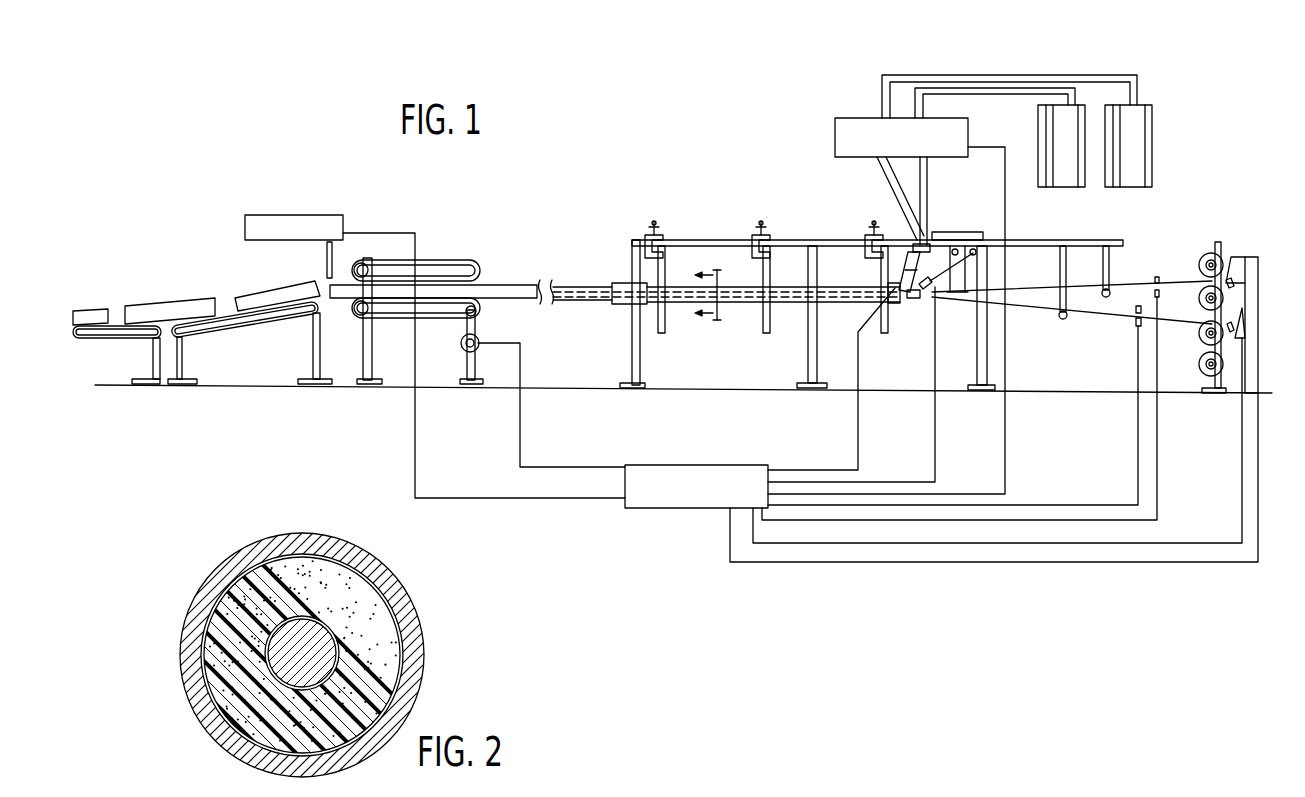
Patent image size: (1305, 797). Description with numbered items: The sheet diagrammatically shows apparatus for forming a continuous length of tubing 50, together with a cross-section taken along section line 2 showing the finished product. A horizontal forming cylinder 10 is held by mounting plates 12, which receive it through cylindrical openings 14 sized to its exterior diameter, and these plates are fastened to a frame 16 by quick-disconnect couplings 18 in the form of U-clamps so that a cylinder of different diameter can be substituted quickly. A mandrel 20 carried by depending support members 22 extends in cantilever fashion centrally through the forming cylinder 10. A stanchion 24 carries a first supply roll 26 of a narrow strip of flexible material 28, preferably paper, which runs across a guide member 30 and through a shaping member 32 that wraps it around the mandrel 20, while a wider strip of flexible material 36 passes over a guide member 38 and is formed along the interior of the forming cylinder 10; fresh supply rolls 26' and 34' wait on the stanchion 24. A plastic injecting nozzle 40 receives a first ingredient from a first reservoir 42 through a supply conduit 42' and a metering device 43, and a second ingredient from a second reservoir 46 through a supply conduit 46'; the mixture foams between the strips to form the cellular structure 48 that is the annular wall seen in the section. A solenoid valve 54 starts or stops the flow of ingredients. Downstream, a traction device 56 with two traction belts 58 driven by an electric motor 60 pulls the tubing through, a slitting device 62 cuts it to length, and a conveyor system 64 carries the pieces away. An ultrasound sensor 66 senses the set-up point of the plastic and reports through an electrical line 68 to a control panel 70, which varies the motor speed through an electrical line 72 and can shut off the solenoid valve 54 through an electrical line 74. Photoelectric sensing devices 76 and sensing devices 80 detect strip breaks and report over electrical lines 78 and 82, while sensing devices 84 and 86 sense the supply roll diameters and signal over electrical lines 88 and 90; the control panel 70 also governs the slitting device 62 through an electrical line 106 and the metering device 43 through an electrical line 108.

In FIG. 1, the section line 2 is at (713, 296).
In FIG. 1, the forming cylinder 10 is at (677, 305).
In FIG. 2, the forming cylinder 10 is at (203, 708).
In FIG. 1, the mounting plates 12 is at (660, 333).
In FIG. 1, the cylindrical openings 14 is at (691, 262).
In FIG. 1, the frame 16 is at (630, 365).
In FIG. 1, the quick-disconnect couplings 18 is at (655, 232).
In FIG. 1, the mandrel 20 is at (748, 297).
In FIG. 2, the mandrel 20 is at (320, 647).
In FIG. 1, the depending support members 22 is at (972, 268).
In FIG. 1, the stanchion 24 is at (1218, 242).
In FIG. 1, the first supply roll 26 is at (1194, 305).
In FIG. 1, the fresh supply roll 26' is at (1192, 371).
In FIG. 1, the strip of flexible material 28 is at (1093, 314).
In FIG. 2, the strip of flexible material 28 is at (327, 687).
In FIG. 1, the guide member 30 is at (1063, 320).
In FIG. 1, the shaping member 32 is at (912, 298).
In FIG. 1, the fresh supply roll 34' is at (1258, 248).
In FIG. 1, the wider strip of flexible material 36 is at (1145, 268).
In FIG. 2, the wider strip of flexible material 36 is at (392, 602).
In FIG. 1, the guide member 38 is at (1102, 293).
In FIG. 1, the plastic injecting nozzle 40 is at (946, 232).
In FIG. 1, the first reservoir 42 is at (1151, 146).
In FIG. 1, the supply conduit 42' is at (1010, 150).
In FIG. 1, the metering device 43 is at (857, 128).
In FIG. 1, the second reservoir 46 is at (1059, 163).
In FIG. 1, the supply conduit 46' is at (995, 166).
In FIG. 2, the cellular structure 48 is at (372, 667).
In FIG. 1, the tubing 50 is at (520, 285).
In FIG. 1, the solenoid valve 54 is at (915, 250).
In FIG. 1, the traction device 56 is at (435, 255).
In FIG. 1, the traction belts 58 is at (457, 260).
In FIG. 1, the electric motor 60 is at (479, 343).
In FIG. 1, the slitting device 62 is at (308, 215).
In FIG. 1, the conveyor system 64 is at (217, 336).
In FIG. 1, the sensor 66 is at (930, 290).
In FIG. 1, the electrical line 68 is at (937, 443).
In FIG. 1, the control panel 70 is at (677, 508).
In FIG. 1, the electrical line 72 is at (520, 403).
In FIG. 1, the electrical line 74 is at (880, 377).
In FIG. 1, the photoelectric sensing devices 76 is at (1157, 277).
In FIG. 1, the electrical line 78 is at (1190, 468).
In FIG. 1, the sensing devices 80 is at (1137, 330).
In FIG. 1, the electrical line 82 is at (1137, 482).
In FIG. 1, the sensing device 84 is at (1243, 334).
In FIG. 1, the sensing device 86 is at (1234, 284).
In FIG. 1, the electrical line 88 is at (1242, 440).
In FIG. 1, the electrical line 90 is at (1258, 472).
In FIG. 1, the electrical line 106 is at (547, 498).
In FIG. 1, the electrical line 108 is at (1045, 470).